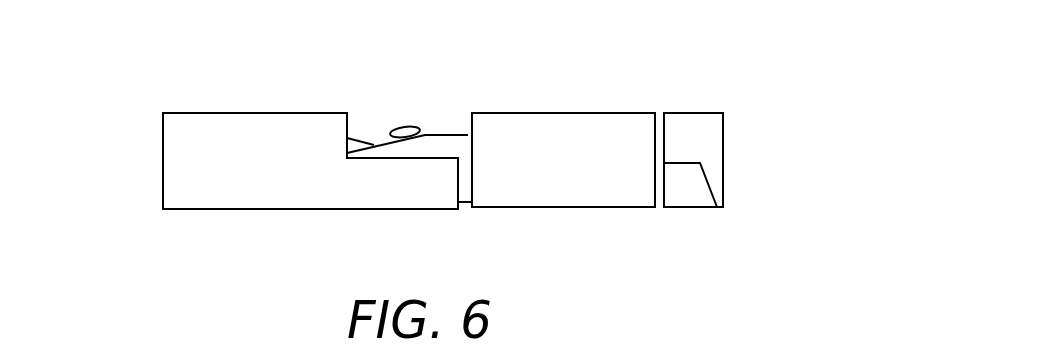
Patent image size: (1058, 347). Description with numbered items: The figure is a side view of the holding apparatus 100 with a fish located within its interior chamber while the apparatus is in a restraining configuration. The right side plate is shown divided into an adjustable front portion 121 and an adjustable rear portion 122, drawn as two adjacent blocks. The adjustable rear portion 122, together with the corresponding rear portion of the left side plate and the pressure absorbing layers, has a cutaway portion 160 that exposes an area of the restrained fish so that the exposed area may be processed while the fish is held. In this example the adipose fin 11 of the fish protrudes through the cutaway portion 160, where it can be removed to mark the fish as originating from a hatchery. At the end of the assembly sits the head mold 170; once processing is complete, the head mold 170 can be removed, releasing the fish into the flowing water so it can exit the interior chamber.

The holding apparatus 100 is at (462, 141).
The adipose fin 11 is at (418, 130).
The cutaway portion 160 is at (466, 113).
The adjustable rear portion 122 is at (227, 192).
The adjustable front portion 121 is at (547, 193).
The head mold 170 is at (685, 210).